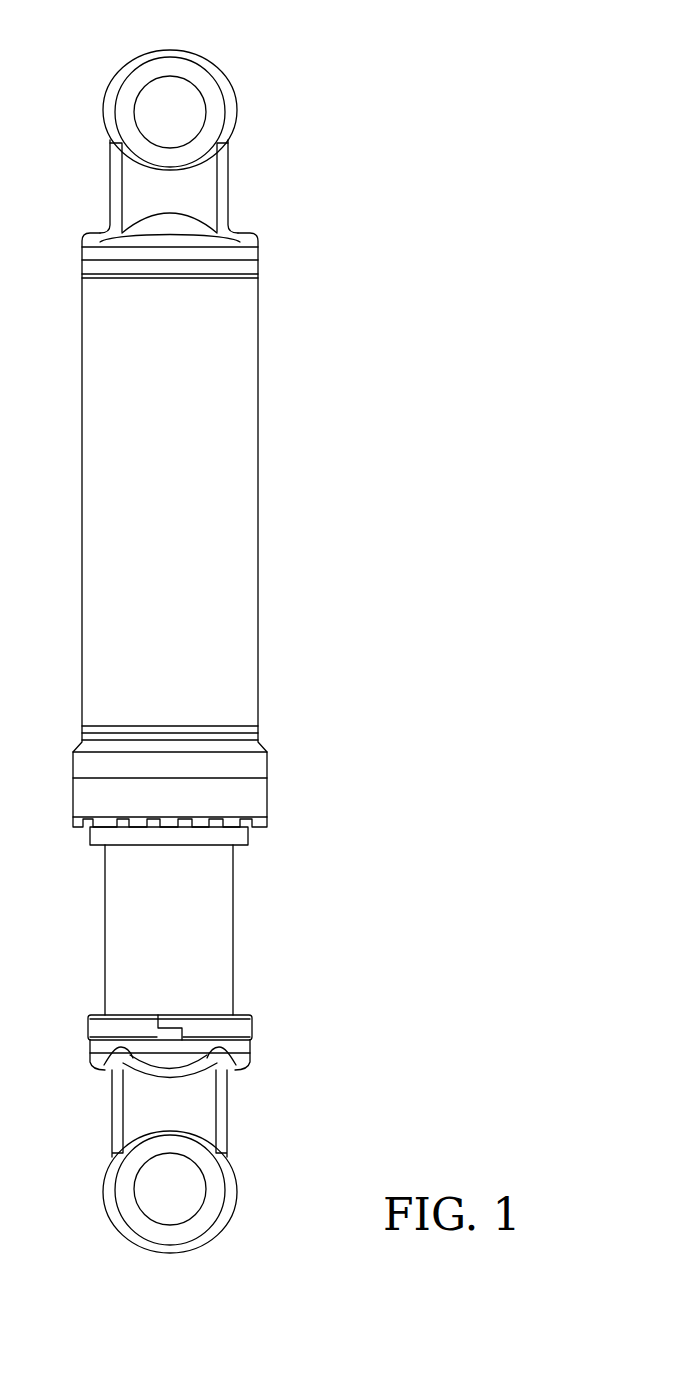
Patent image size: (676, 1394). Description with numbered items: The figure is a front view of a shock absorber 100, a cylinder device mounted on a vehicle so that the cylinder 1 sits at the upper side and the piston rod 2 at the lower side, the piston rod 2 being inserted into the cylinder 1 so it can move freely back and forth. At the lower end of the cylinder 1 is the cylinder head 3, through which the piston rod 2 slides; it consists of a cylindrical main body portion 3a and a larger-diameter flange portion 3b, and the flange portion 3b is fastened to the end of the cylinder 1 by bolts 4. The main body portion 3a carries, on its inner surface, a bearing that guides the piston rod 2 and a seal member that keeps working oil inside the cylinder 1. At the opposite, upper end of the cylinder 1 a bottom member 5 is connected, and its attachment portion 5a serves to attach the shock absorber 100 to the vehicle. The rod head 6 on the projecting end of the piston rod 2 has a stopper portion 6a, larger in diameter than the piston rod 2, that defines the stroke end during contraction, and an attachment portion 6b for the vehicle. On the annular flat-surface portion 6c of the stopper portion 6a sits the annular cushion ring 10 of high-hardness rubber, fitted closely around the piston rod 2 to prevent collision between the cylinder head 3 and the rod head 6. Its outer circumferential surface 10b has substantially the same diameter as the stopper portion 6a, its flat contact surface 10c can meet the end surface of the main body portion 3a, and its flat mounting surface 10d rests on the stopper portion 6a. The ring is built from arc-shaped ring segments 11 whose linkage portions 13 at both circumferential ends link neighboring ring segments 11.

The shock absorber 100 is at (260, 62).
The cylinder 1 is at (241, 598).
The piston rod 2 is at (130, 881).
The cylinder head 3 is at (338, 780).
The main body portion 3a is at (237, 835).
The flange portion 3b is at (252, 796).
The bolts 4 is at (185, 827).
The bottom member 5 is at (233, 192).
The attachment portion 5a is at (214, 108).
The rod head 6 is at (233, 1114).
The stopper portion 6a is at (252, 1045).
The attachment portion 6b is at (213, 1195).
The annular flat-surface portion 6c is at (103, 1038).
The cushion ring 10 is at (261, 1016).
The outer circumferential surface 10b is at (113, 1055).
The contact surface 10c is at (223, 1015).
The mounting surface 10d is at (242, 1050).
The ring segments 11 is at (122, 1027).
The linkage portions 13 is at (172, 1013).